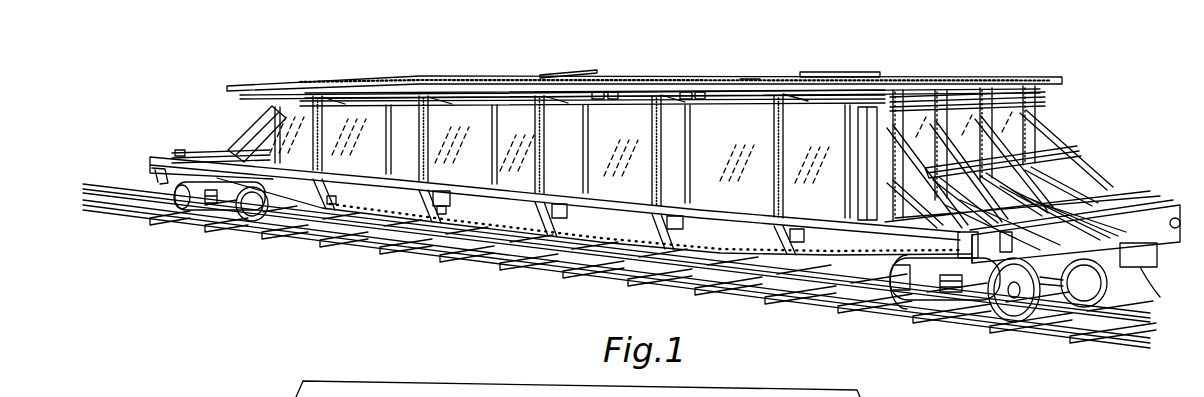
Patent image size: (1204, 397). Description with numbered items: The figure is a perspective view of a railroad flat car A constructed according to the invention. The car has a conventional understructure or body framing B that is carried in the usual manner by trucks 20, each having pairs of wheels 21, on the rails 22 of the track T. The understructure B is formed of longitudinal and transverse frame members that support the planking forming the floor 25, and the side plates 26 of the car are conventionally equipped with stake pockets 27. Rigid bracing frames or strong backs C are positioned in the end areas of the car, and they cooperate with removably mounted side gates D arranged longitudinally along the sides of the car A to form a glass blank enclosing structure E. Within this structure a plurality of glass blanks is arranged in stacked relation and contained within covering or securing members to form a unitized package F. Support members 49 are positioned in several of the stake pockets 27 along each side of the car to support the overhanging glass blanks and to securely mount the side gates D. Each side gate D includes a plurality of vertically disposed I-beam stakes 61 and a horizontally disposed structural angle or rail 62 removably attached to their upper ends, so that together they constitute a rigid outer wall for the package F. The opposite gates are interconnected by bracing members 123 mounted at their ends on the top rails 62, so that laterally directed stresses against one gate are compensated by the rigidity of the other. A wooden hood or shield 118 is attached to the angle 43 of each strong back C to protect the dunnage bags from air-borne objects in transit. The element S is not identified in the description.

The angle 43 is at (367, 80).
The bracing member 123 is at (557, 73).
The side gate D is at (490, 88).
The glass blank enclosing structure E is at (750, 78).
The rail 62 is at (597, 92).
The stake 61 is at (630, 78).
The railroad flat car A is at (613, 223).
The side plate 26 is at (580, 223).
The stake pocket 27 is at (442, 192).
The support member 49 is at (336, 201).
The unitized package F is at (443, 128).
The wooden hood 118 is at (866, 130).
The strong back C is at (240, 126).
The floor 25 is at (883, 232).
The body framing B is at (1073, 307).
The wheel 21 is at (917, 297).
The truck 20 is at (200, 213).
The rail 22 is at (1052, 344).
The track T is at (1047, 340).
The sheet box S is at (400, 381).